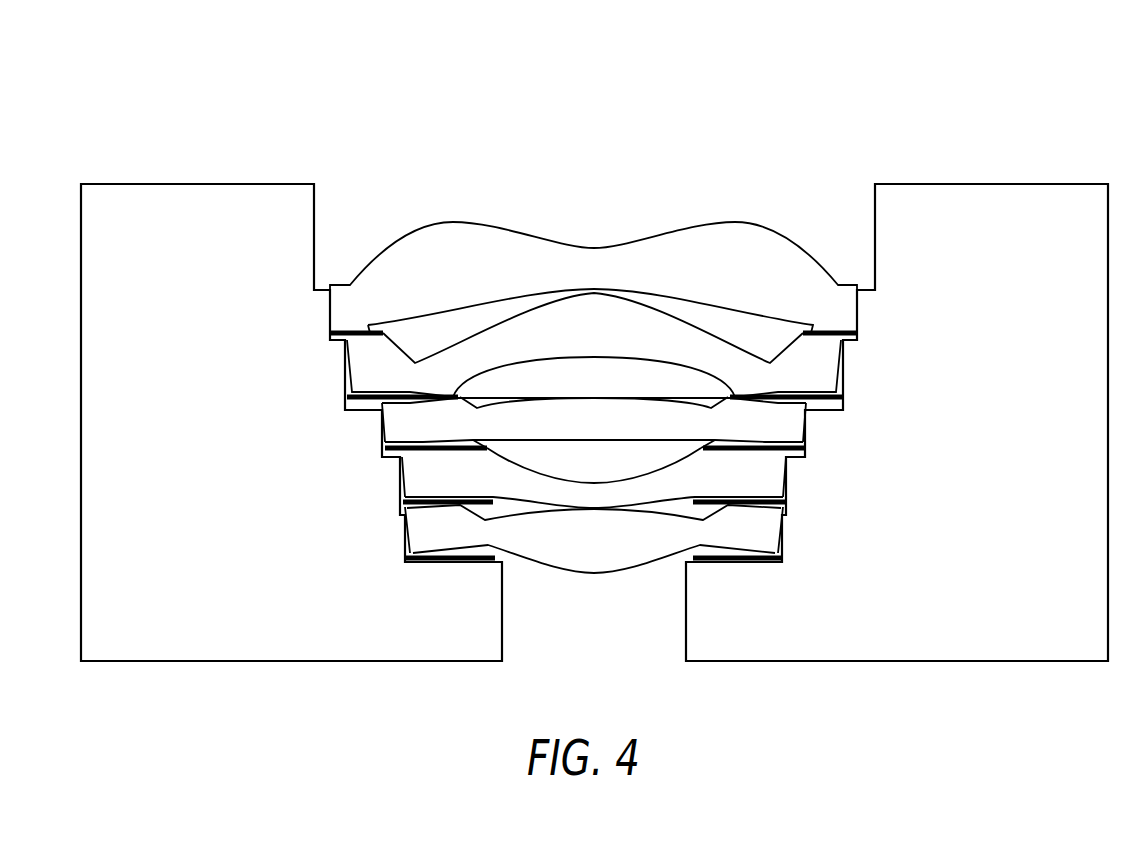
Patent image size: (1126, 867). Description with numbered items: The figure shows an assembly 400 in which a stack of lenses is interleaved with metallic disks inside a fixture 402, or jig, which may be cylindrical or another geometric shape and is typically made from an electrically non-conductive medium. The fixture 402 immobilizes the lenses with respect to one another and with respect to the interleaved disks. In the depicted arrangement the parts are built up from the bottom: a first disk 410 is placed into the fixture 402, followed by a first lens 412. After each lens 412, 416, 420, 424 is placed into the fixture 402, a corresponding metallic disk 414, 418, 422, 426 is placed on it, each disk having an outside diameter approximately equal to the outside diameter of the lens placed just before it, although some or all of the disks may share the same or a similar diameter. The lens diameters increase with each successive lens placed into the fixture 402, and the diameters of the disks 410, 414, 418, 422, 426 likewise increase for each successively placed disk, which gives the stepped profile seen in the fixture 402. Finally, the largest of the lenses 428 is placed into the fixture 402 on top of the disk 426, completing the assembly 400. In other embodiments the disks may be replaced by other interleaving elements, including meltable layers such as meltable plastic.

The assembly 400 is at (998, 76).
The fixture 402 is at (594, 422).
The first disk 410 is at (766, 562).
The first lens 412 is at (612, 556).
The metallic disk 414 is at (785, 499).
The lens 416 is at (475, 484).
The metallic disk 418 is at (805, 449).
The lens 420 is at (768, 436).
The metallic disk 422 is at (843, 398).
The lens 424 is at (613, 344).
The metallic disk 426 is at (858, 335).
The largest lens 428 is at (465, 279).